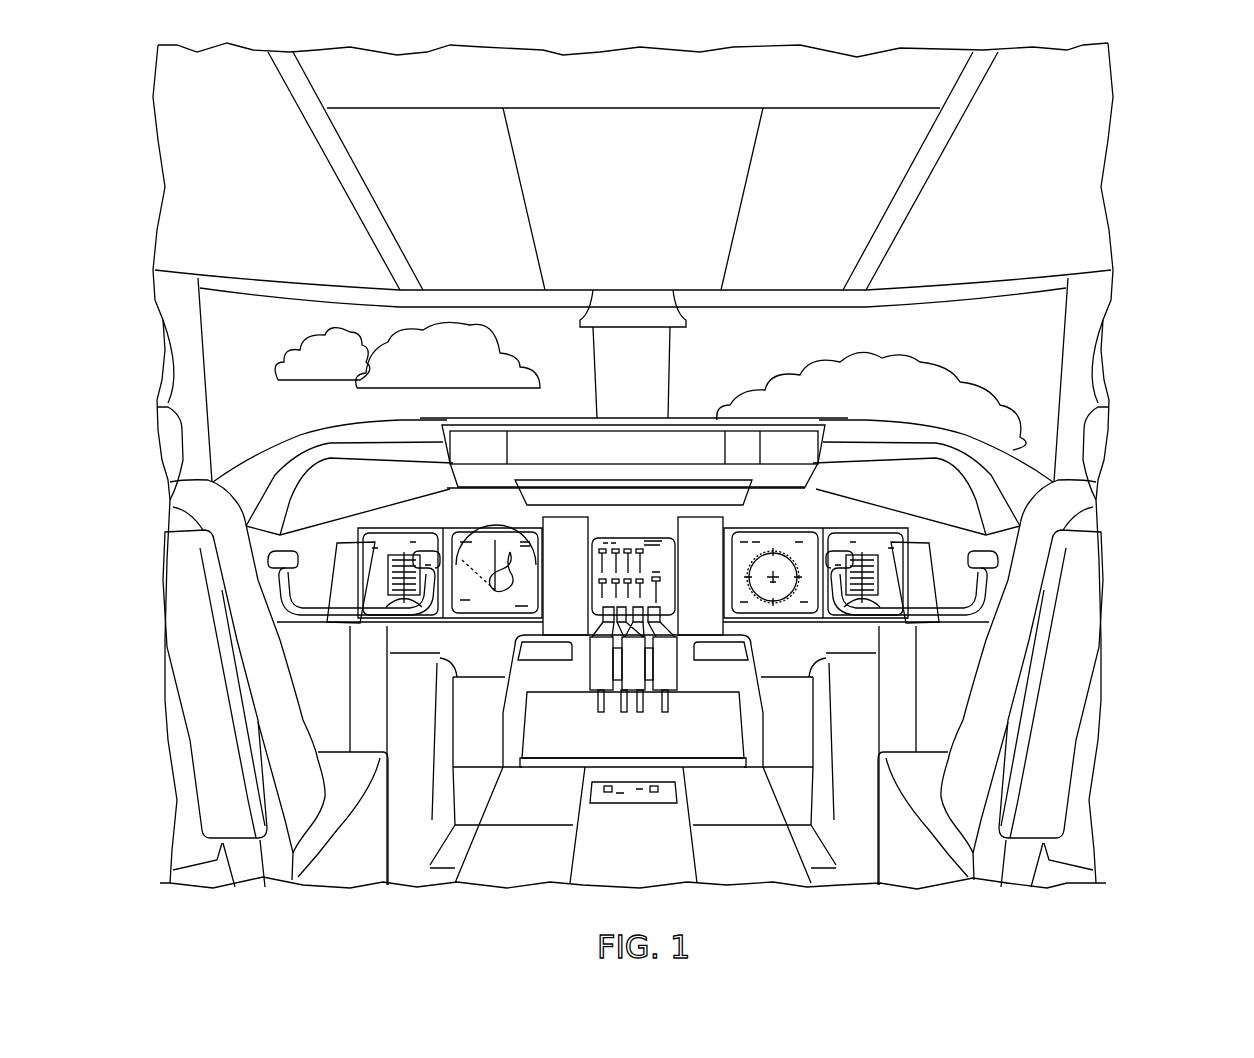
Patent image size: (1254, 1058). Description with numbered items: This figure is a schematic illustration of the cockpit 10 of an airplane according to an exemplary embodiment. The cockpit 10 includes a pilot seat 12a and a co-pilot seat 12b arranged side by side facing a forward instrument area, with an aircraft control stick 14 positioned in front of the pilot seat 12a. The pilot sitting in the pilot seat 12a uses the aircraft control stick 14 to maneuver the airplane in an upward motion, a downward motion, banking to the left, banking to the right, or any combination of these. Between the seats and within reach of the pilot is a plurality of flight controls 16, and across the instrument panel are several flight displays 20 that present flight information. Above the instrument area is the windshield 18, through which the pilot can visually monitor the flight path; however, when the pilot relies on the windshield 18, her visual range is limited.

The cockpit 10 is at (1163, 172).
The pilot seat 12a is at (168, 582).
The co-pilot seat 12b is at (1098, 598).
The aircraft control stick 14 is at (398, 620).
The plurality of flight controls 16 is at (670, 647).
The windshield 18 is at (222, 348).
The flight displays 20 is at (395, 533).